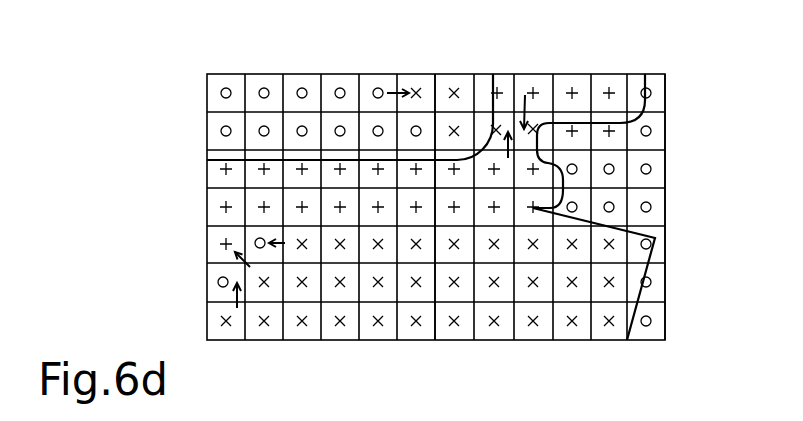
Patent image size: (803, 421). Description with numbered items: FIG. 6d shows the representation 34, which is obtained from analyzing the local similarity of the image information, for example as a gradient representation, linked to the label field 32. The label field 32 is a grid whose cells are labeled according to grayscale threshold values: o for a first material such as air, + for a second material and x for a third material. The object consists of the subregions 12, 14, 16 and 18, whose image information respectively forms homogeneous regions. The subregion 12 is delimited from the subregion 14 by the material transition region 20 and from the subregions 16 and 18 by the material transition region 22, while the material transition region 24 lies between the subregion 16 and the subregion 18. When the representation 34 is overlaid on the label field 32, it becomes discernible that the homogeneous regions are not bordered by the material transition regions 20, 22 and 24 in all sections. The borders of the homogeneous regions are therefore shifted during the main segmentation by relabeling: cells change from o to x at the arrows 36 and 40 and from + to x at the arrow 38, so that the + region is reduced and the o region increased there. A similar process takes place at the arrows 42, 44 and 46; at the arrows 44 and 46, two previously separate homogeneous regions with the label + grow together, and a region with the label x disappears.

The subregion 12 is at (521, 86).
The subregion 14 is at (214, 103).
The subregion 16 is at (653, 161).
The subregion 18 is at (465, 325).
The material transition region 20 is at (225, 151).
The material transition region 22 is at (253, 206).
The material transition region 24 is at (641, 292).
The label field 32 is at (437, 81).
The representation 34 is at (666, 207).
The arrow 36 is at (234, 308).
The arrow 38 is at (245, 263).
The arrow 40 is at (284, 246).
The arrow 42 is at (390, 91).
The arrow 44 is at (525, 107).
The arrow 46 is at (512, 144).